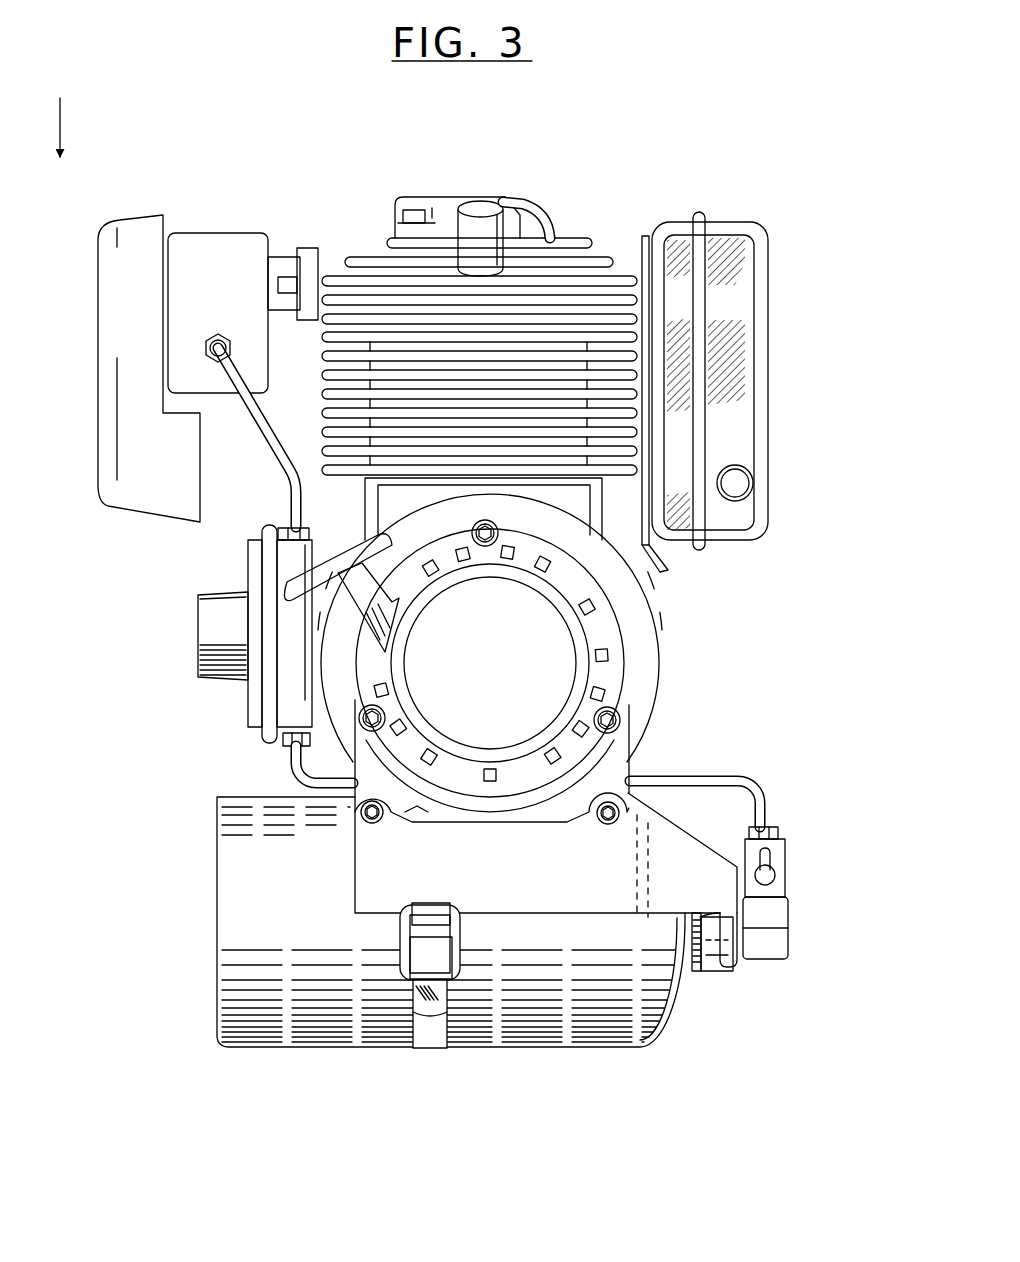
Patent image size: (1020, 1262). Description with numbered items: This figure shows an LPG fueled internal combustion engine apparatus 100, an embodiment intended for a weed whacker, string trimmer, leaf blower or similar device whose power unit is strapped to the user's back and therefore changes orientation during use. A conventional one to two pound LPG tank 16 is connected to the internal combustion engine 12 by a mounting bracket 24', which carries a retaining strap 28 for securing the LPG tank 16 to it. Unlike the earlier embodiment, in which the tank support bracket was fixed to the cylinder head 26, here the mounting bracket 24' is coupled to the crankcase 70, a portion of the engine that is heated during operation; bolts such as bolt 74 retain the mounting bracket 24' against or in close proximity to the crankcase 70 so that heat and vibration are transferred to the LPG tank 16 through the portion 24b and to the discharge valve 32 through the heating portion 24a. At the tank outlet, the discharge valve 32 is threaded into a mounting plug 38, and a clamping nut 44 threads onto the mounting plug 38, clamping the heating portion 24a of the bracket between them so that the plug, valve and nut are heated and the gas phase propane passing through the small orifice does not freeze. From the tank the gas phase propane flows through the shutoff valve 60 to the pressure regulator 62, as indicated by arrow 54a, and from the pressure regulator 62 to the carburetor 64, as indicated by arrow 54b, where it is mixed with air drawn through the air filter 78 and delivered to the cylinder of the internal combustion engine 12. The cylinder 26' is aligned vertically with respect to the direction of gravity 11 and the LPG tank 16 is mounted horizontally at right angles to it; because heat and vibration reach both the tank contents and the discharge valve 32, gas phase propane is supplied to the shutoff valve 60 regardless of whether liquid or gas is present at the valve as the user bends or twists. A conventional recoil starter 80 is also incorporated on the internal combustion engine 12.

The LPG fueled internal combustion engine apparatus 100 is at (712, 118).
The direction of gravity 11 is at (63, 118).
The air filter 78 is at (128, 208).
The carburetor 64 is at (215, 230).
The internal combustion engine 12 is at (576, 234).
The cylinder head 26 is at (477, 208).
The crankcase 70 is at (606, 486).
The cylinder 26' is at (694, 568).
The recoil starter 80 is at (612, 672).
The arrow indicating propane flow from pressure regulator to carburetor 54b is at (268, 483).
The pressure regulator 62 is at (192, 652).
The arrow indicating propane flow from shutoff valve to pressure regulator 54a is at (290, 780).
The tank portion of mounting bracket 24b is at (524, 897).
The bolt 74 is at (379, 827).
The mounting bracket 24' is at (692, 821).
The heating portion of mounting bracket 24a is at (747, 970).
The shutoff valve 60 is at (790, 868).
The clamping nut 44 is at (795, 916).
The discharge valve 32 is at (694, 972).
The mounting plug 38 is at (720, 973).
The LPG tank 16 is at (642, 1052).
The retaining strap 28 is at (420, 1054).